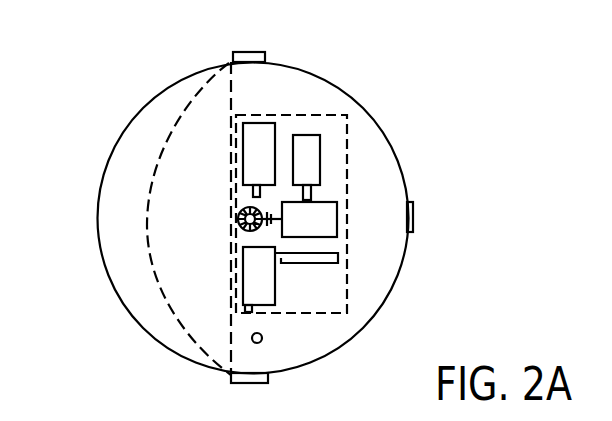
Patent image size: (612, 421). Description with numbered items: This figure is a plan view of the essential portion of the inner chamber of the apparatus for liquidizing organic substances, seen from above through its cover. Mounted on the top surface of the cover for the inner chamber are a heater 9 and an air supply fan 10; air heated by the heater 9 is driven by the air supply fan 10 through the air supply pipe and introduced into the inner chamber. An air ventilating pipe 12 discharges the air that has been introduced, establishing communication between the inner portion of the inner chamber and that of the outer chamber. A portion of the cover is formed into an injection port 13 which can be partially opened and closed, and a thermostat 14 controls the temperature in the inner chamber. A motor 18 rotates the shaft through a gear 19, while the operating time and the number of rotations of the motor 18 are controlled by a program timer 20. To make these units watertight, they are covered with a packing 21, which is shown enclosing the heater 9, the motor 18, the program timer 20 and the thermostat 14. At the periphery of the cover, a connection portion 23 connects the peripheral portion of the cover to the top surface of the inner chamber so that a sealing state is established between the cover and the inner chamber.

The heater 9 is at (253, 133).
The air supply fan 10 is at (267, 272).
The air ventilating pipe 12 is at (262, 336).
The injection port 13 is at (143, 228).
The thermostat 14 is at (245, 250).
The motor 18 is at (317, 212).
The gear 19 is at (238, 219).
The program timer 20 is at (308, 150).
The packing 21 is at (325, 110).
The connection portion 23 is at (250, 52).